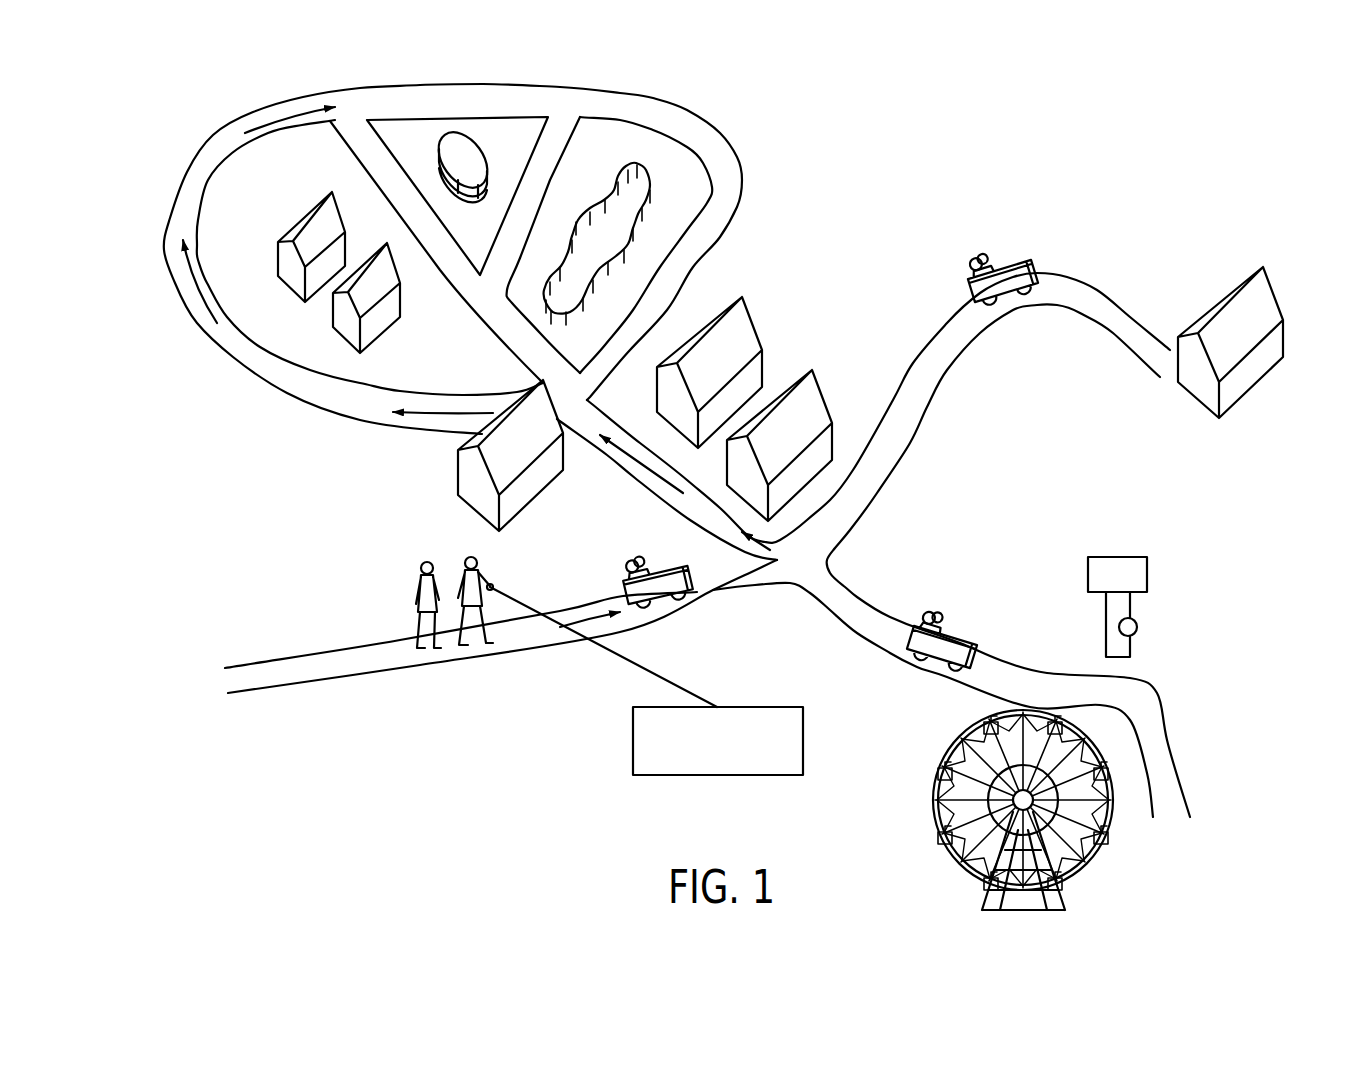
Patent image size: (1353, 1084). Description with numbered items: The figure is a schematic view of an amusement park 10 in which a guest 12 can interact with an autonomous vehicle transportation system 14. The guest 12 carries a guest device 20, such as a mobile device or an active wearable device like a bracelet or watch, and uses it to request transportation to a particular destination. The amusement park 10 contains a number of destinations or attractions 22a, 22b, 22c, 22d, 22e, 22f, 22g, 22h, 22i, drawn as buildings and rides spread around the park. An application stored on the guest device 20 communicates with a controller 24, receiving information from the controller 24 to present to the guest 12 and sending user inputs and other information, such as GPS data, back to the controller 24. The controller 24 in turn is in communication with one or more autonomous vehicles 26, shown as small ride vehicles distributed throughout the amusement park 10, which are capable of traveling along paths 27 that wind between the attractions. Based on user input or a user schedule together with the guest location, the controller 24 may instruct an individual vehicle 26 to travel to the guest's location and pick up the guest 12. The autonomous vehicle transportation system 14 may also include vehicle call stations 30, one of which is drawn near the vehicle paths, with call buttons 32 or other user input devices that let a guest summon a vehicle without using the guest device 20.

The amusement park 10 is at (160, 136).
The guest 12 is at (467, 642).
The autonomous vehicle transportation system 14 is at (268, 788).
The guest device 20 is at (490, 587).
The attraction 22a is at (307, 267).
The attraction 22b is at (380, 333).
The attraction 22c is at (475, 512).
The attraction 22d is at (750, 318).
The attraction 22e is at (820, 387).
The attraction 22f is at (973, 727).
The attraction 22g is at (1270, 282).
The attraction 22h is at (603, 200).
The attraction 22i is at (490, 165).
The controller 24 is at (805, 740).
The autonomous vehicle 26 is at (1038, 262).
The path 27 is at (285, 392).
The vehicle call station 30 is at (1147, 573).
The call button 32 is at (1137, 620).